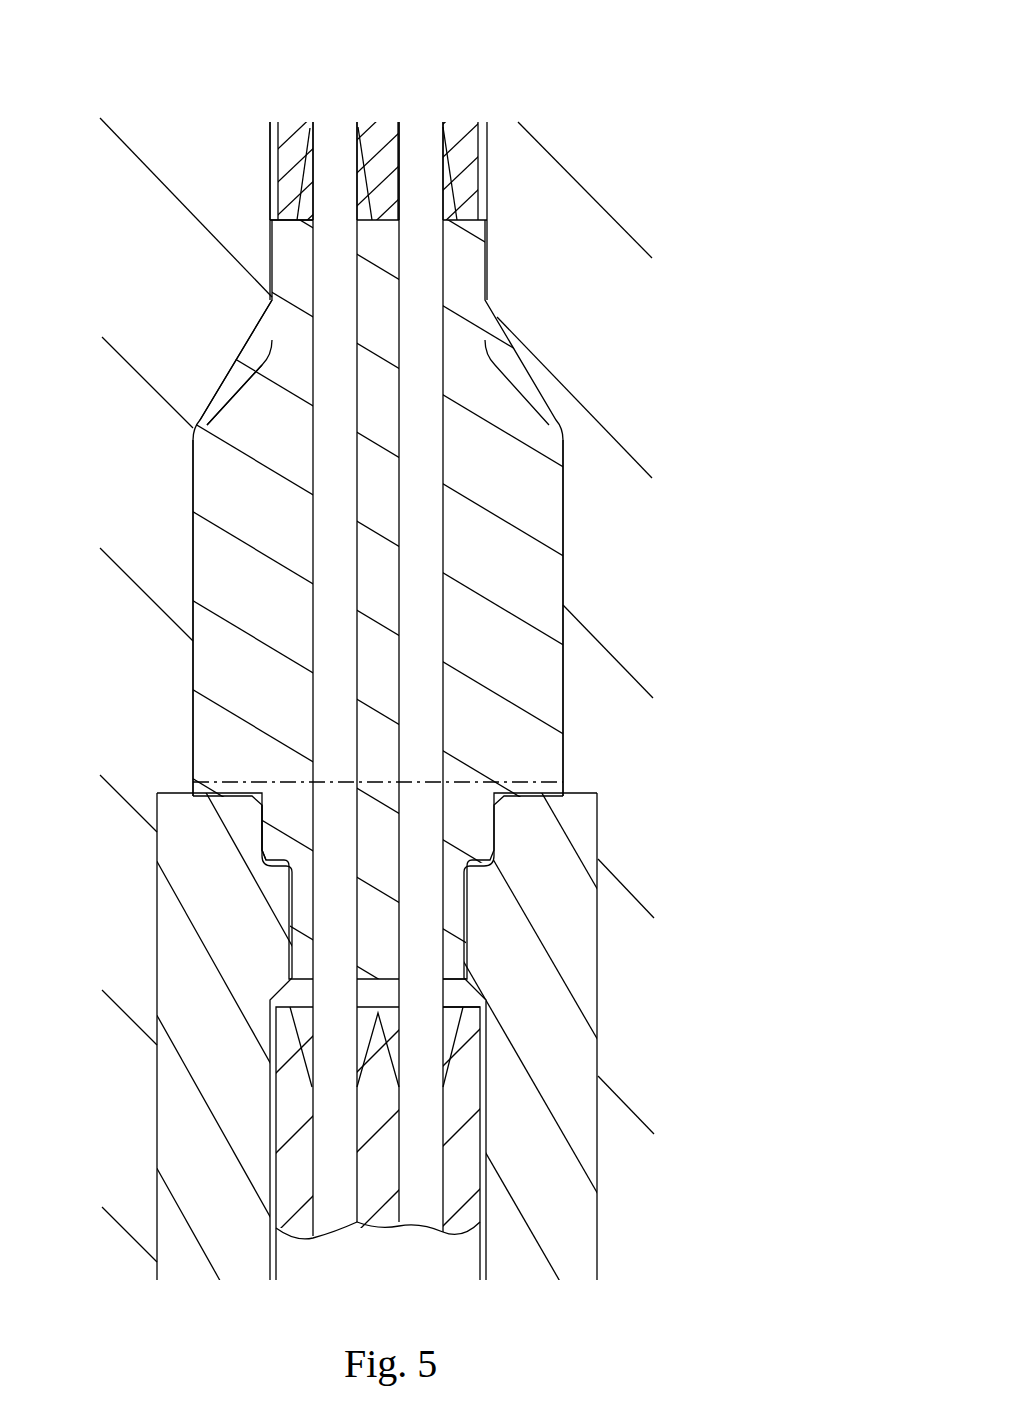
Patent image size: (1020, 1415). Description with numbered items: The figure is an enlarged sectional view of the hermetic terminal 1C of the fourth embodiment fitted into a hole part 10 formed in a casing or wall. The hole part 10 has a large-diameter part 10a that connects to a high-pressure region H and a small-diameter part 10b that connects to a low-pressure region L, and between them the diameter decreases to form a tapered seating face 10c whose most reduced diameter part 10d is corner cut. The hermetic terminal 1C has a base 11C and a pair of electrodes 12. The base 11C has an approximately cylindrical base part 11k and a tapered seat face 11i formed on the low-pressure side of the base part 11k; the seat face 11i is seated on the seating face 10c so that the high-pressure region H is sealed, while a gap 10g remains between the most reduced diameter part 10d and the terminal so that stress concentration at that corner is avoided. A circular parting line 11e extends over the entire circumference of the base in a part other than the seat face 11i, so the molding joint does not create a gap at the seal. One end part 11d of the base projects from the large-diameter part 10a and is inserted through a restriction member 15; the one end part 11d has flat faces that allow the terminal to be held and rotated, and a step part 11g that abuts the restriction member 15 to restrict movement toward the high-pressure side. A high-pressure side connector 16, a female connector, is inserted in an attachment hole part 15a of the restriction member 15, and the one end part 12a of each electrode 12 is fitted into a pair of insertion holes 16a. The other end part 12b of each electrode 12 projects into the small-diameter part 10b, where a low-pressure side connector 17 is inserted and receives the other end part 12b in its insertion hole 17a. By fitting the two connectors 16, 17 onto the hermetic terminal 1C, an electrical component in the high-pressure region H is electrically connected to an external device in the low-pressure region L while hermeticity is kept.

The hermetic terminal 1C is at (523, 307).
The hole part 10 is at (438, 653).
The large-diameter part 10a is at (563, 478).
The small-diameter part 10b is at (463, 133).
The seating face 10c is at (243, 357).
The most reduced diameter part 10d is at (268, 300).
The gap 10g is at (258, 345).
The base 11C is at (547, 512).
The one end part 11d is at (450, 884).
The parting line 11e is at (560, 797).
The step part 11g is at (273, 863).
The seat face 11i is at (228, 385).
The base part 11k is at (480, 715).
The electrode 12 is at (327, 545).
The one end part 12a is at (418, 1221).
The other end part 12b is at (332, 132).
The restriction member 15 is at (570, 1210).
The attachment hole part 15a is at (483, 1087).
The high-pressure side connector 16 is at (468, 1253).
The insertion hole 16a is at (357, 1190).
The low-pressure side connector 17 is at (293, 132).
The insertion hole 17a is at (357, 150).
The high-pressure region H is at (457, 997).
The low-pressure region L is at (273, 213).